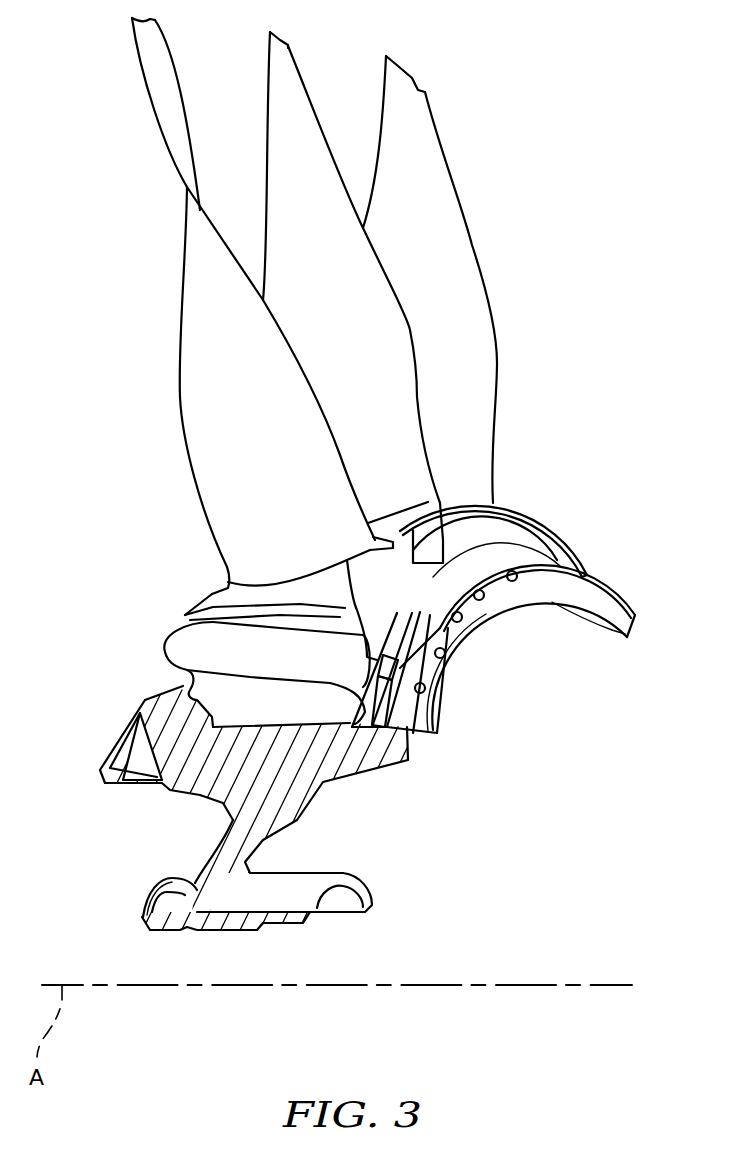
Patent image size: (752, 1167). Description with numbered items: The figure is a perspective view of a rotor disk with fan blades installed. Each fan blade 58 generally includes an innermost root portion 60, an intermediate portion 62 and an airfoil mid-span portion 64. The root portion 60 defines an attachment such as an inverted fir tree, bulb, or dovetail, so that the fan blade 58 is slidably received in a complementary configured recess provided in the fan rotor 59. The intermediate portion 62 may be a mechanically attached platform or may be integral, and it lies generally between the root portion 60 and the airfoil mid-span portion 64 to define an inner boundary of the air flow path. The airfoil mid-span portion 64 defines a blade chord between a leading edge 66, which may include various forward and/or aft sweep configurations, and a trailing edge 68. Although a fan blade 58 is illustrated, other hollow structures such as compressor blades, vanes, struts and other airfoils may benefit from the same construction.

The fan blade 58 is at (328, 306).
The fan rotor 59 is at (315, 757).
The root portion 60 is at (377, 608).
The intermediate portion 62 is at (223, 595).
The airfoil mid-span portion 64 is at (246, 306).
The leading edge 66 is at (190, 485).
The trailing edge 68 is at (327, 413).